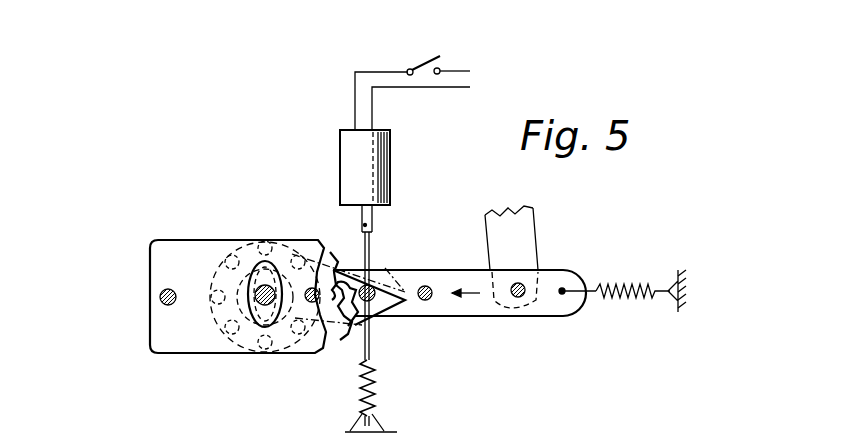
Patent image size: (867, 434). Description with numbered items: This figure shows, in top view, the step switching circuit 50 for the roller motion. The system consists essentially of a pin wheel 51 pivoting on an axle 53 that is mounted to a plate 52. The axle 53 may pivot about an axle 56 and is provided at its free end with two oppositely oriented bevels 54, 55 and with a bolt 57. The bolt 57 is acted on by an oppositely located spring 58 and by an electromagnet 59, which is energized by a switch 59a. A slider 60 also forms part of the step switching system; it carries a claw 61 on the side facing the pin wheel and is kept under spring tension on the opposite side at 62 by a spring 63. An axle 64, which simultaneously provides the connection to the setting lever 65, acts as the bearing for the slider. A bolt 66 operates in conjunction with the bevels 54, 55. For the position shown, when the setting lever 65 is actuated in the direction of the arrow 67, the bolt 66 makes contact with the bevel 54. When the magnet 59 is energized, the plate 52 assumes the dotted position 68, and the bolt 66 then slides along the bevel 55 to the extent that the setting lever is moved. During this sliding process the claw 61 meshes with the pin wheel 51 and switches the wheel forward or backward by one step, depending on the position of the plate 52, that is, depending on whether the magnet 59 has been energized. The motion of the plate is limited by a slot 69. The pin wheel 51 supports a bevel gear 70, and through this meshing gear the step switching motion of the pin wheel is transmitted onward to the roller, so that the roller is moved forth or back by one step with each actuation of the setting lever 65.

The brake assembly 50 is at (187, 227).
The pin wheel 51 is at (265, 245).
The plate 52 is at (198, 260).
The axle 53 is at (282, 330).
The bevel 54 is at (357, 270).
The bevel 55 is at (353, 342).
The axle 56 is at (160, 297).
The bolt 57 is at (372, 303).
The spring 58 is at (378, 382).
The electromagnet 59 is at (375, 168).
The switch 59a is at (425, 55).
The slider 60 is at (558, 303).
The claw 61 is at (360, 332).
The spring attachment point 62 is at (570, 280).
The spring 63 is at (642, 300).
The axle 64 is at (518, 298).
The setting lever 65 is at (520, 232).
The bolt 66 is at (430, 287).
The arrow 67 is at (473, 298).
The dotted position 68 is at (399, 278).
The slot 69 is at (262, 330).
The bevel gear 70 is at (232, 305).